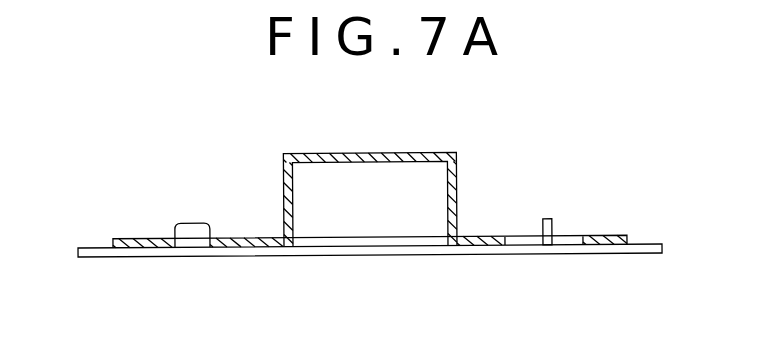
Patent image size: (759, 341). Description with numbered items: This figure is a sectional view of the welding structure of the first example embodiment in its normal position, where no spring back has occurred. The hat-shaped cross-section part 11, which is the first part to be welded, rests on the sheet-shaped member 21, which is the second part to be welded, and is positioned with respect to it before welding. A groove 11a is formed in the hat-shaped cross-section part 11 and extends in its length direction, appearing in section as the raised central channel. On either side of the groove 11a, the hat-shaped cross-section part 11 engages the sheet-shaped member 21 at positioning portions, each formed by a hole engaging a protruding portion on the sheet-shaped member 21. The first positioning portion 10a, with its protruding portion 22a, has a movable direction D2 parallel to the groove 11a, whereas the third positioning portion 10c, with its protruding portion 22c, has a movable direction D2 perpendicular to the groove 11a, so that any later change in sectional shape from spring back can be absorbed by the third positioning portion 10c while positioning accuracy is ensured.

The sheet-shaped member 21 is at (600, 253).
The hat-shaped cross-section part 11 is at (611, 237).
The first positioning portion 10a is at (213, 212).
The third positioning portion 10c is at (560, 212).
The protruding portion 22a is at (188, 228).
The protruding portion 22c is at (543, 227).
The groove 11a is at (376, 224).
The movable direction D2 is at (571, 274).